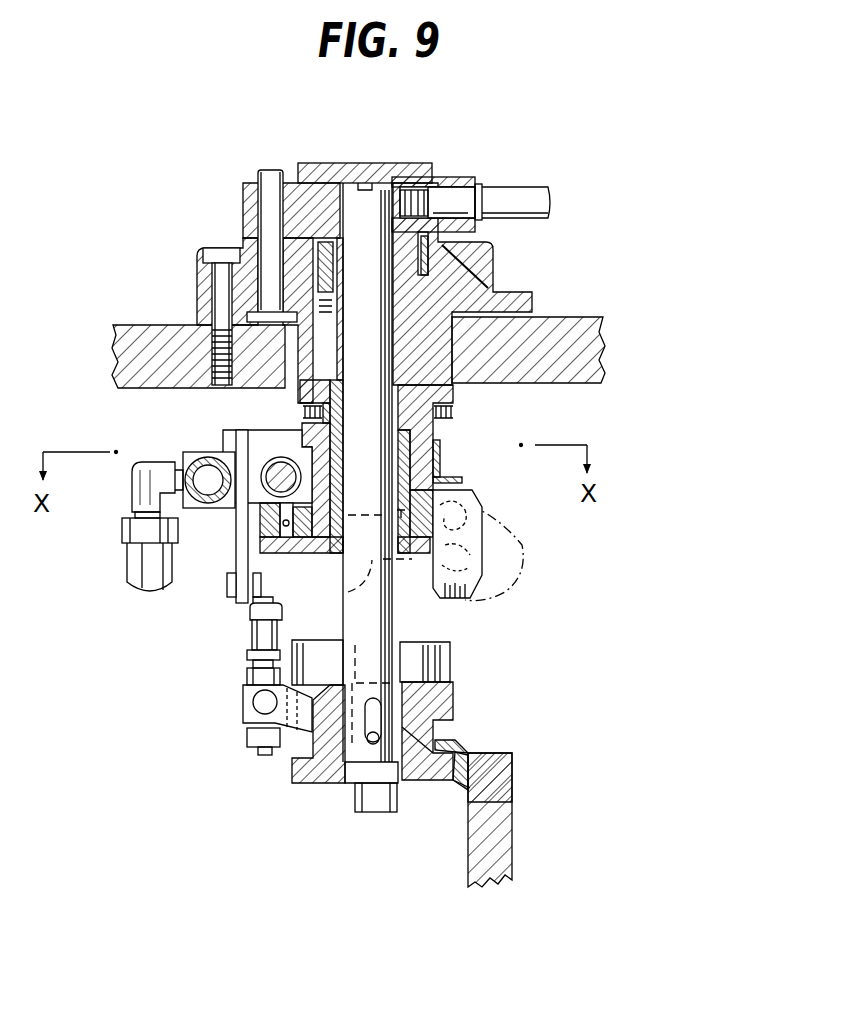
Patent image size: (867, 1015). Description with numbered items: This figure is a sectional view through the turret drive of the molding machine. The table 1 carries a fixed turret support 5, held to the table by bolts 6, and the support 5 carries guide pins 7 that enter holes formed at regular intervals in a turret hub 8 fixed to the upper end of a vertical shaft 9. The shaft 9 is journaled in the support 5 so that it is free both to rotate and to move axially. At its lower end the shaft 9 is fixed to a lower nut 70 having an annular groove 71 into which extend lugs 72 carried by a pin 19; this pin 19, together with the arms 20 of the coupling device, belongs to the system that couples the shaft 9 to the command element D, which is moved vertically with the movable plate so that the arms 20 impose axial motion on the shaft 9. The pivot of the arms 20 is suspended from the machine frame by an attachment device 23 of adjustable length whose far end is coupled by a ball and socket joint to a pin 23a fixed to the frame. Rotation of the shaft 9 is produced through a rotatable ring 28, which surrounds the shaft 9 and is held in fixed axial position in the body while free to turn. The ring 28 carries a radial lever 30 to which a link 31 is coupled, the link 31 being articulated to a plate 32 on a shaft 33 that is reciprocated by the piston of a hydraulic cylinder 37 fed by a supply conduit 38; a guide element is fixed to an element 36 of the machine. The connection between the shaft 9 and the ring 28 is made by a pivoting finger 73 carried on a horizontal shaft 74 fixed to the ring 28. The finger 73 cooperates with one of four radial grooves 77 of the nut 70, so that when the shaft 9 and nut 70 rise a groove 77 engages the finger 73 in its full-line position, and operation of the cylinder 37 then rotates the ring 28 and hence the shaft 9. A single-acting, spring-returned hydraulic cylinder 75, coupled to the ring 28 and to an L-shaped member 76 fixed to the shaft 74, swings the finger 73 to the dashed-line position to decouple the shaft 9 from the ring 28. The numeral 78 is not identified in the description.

The table 1 is at (140, 338).
The turret support 5 is at (198, 290).
The bolts 6 is at (219, 248).
The guide pins 7 is at (272, 170).
The turret hub 8 is at (463, 180).
The vertical shaft 9 is at (358, 623).
The pin 19 is at (355, 770).
The arms 20 is at (297, 755).
The attachment device 23 is at (262, 640).
The pin 23a is at (236, 590).
The rotatable ring 28 is at (445, 505).
The lever 30 is at (240, 537).
The link 31 is at (240, 515).
The plate 32 is at (272, 560).
The shaft 33 is at (278, 465).
The element 36 is at (243, 567).
The hydraulic cylinder 37 is at (181, 454).
The supply conduit 38 is at (150, 565).
The lower nut 70 is at (490, 632).
The annular groove 71 is at (448, 732).
The lugs 72 is at (420, 790).
The pivoting finger 73 is at (516, 577).
The shaft 74 is at (458, 510).
The hydraulic cylinder 75 is at (348, 592).
The L-shaped member 76 is at (325, 783).
The radial grooves 77 is at (385, 672).
The follower 78 is at (405, 570).
The command element D is at (512, 832).